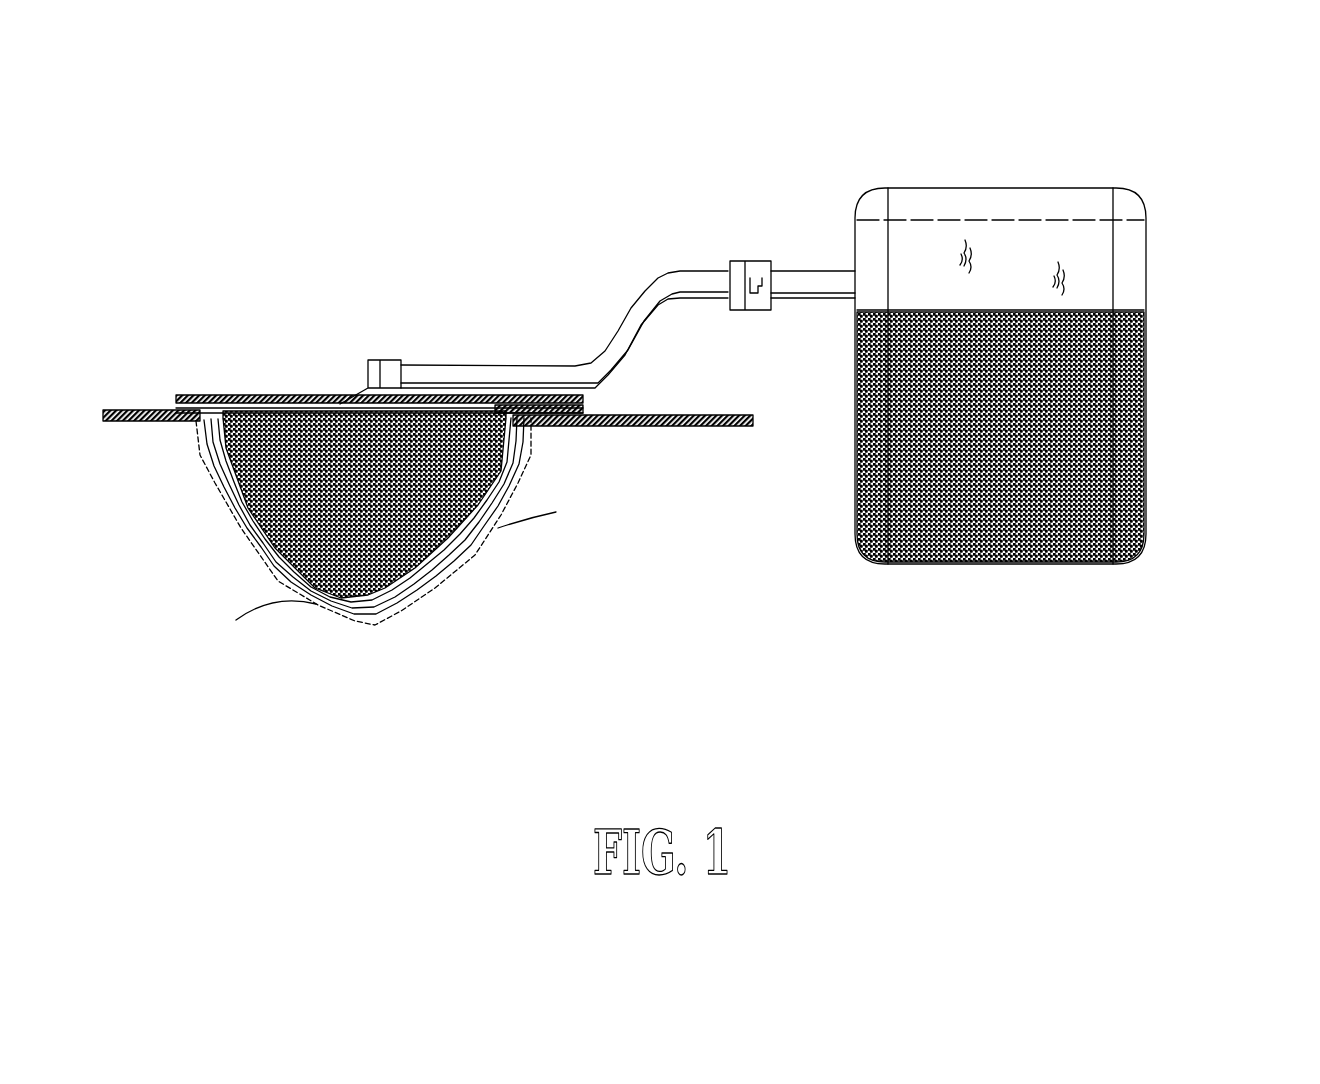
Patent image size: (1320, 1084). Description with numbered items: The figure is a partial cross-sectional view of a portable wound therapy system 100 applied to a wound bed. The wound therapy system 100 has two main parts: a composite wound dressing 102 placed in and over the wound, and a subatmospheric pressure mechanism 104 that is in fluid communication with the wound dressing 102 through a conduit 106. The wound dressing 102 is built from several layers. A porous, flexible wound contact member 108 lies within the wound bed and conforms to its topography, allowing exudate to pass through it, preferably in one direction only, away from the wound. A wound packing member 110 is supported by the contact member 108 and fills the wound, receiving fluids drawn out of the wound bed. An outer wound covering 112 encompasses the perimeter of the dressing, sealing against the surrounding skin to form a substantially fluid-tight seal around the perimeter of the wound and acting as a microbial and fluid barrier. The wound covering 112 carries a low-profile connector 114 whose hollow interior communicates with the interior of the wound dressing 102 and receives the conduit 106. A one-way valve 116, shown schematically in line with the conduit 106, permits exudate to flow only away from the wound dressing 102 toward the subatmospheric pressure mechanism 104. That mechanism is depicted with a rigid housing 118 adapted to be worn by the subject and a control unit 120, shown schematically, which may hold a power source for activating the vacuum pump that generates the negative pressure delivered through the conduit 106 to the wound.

The wound therapy system 100 is at (611, 638).
The composite wound dressing 102 is at (223, 552).
The subatmospheric pressure mechanism 104 is at (1079, 430).
The conduit 106 is at (651, 262).
The wound contact member 108 is at (468, 550).
The wound packing member 110 is at (227, 432).
The wound covering 112 is at (245, 388).
The connector 114 is at (367, 350).
The valve 116 is at (752, 254).
The housing 118 is at (917, 606).
The control unit 120 is at (1020, 195).